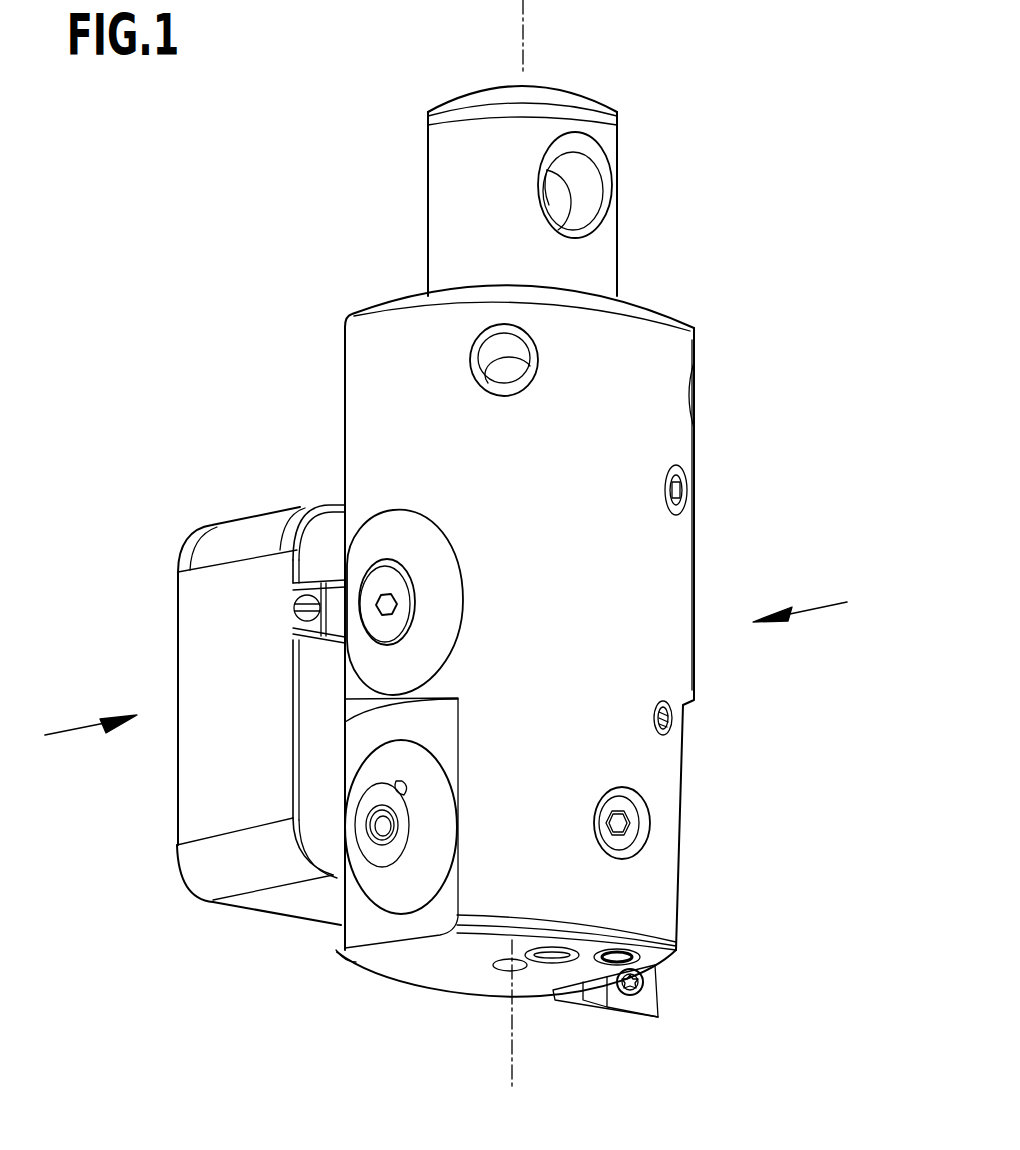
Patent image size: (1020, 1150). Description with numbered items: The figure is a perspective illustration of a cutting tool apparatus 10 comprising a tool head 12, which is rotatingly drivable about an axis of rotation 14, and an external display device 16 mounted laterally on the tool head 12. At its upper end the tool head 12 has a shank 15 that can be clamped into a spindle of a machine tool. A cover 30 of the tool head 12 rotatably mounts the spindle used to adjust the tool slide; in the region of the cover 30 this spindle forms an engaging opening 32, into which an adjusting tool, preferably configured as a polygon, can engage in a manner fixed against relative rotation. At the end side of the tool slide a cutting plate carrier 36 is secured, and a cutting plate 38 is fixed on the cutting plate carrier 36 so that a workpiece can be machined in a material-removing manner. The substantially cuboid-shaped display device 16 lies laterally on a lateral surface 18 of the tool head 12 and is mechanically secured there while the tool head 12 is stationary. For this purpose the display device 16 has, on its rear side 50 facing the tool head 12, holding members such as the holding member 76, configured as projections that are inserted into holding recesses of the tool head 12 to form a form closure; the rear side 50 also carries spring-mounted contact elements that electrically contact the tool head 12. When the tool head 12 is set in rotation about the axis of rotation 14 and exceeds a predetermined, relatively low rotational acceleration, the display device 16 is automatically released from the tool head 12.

The cutting tool apparatus 10 is at (267, 238).
The tool head 12 is at (692, 319).
The axis of rotation 14 is at (512, 1035).
The shank 15 is at (447, 181).
The external display device 16 is at (239, 515).
The lateral surface 18 is at (674, 544).
The cover 30 is at (407, 882).
The engaging opening 32 is at (382, 827).
The cutting plate carrier 36 is at (588, 1008).
The cutting plate 38 is at (650, 1000).
The rear side 50 is at (313, 678).
The holding member 76 is at (330, 582).